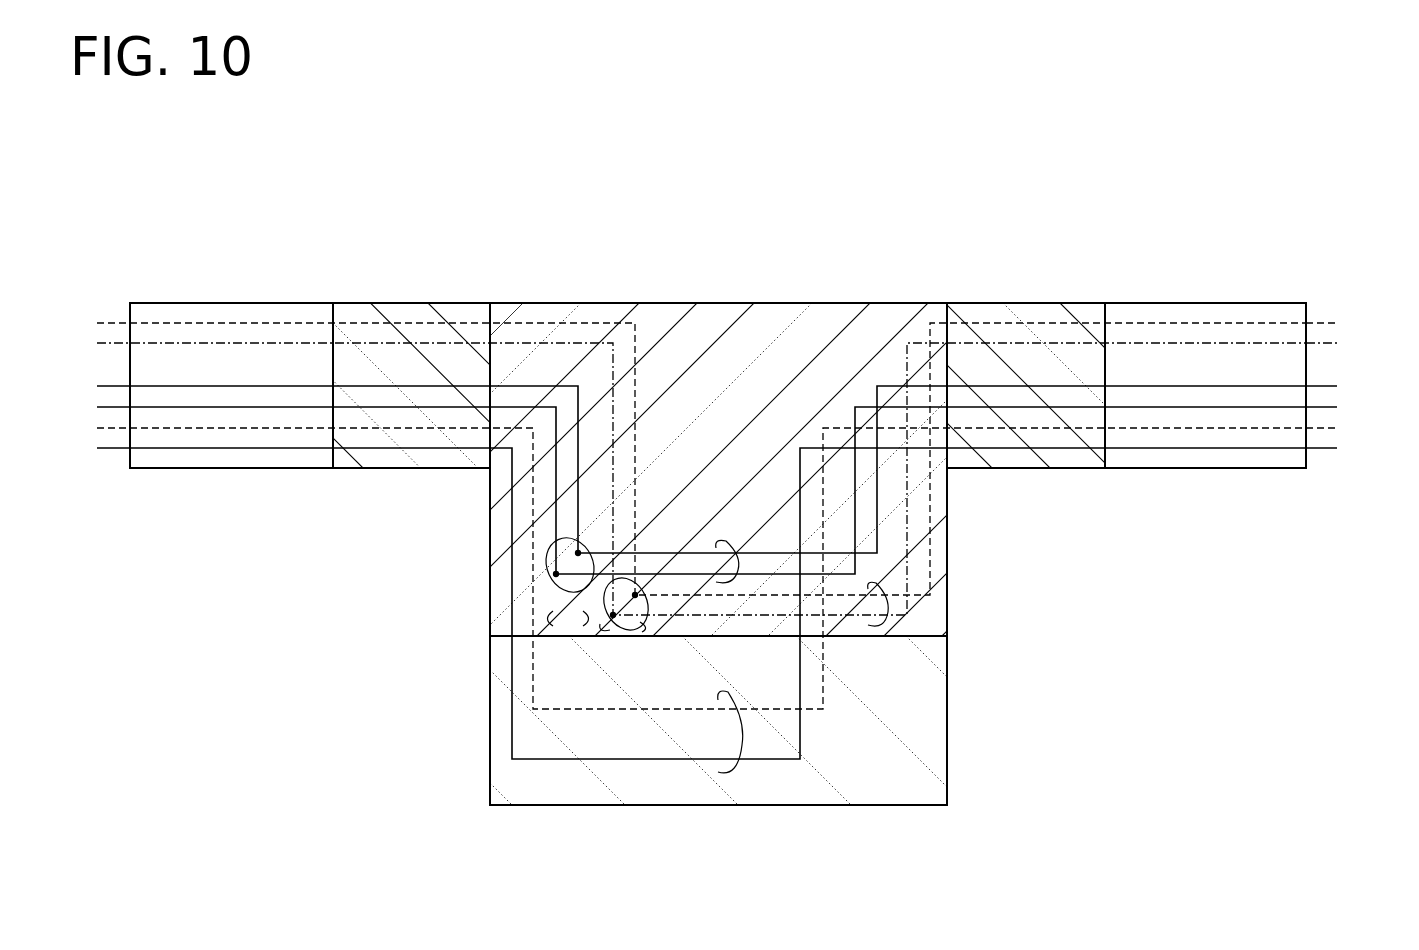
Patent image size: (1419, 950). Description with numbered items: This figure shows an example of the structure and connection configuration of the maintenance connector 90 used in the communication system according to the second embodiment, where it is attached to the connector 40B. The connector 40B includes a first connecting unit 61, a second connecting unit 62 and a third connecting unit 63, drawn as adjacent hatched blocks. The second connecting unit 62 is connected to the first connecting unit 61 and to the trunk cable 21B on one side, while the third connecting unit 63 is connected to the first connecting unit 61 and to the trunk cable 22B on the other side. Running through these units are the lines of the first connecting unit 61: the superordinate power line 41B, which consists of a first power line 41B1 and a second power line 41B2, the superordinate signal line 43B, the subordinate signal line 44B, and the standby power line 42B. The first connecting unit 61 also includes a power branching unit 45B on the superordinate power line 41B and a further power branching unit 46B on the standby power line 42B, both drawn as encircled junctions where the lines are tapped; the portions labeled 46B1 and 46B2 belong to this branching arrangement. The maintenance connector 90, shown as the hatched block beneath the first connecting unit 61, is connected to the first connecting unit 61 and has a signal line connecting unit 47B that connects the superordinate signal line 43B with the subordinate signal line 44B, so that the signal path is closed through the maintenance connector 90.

The trunk cable 21B is at (237, 302).
The second connecting unit 62 is at (413, 302).
The second power line 41B2 is at (724, 545).
The first connecting unit 61 is at (837, 302).
The third connecting unit 63 is at (1018, 302).
The trunk cable 22B is at (1193, 302).
The standby power line 42B is at (97, 319).
The superordinate power line 41B is at (97, 380).
The superordinate signal line 43B is at (97, 422).
The subordinate signal line 44B is at (1340, 420).
The connector 40B is at (418, 508).
The power branching unit 45B is at (548, 562).
The power branching unit 46B is at (606, 606).
The first power line 41B1 is at (546, 619).
The second connection portion first part 46B1 is at (606, 630).
The second connection portion second part 46B2 is at (890, 625).
The signal line connecting unit 47B is at (724, 776).
The maintenance connector 90 is at (565, 807).